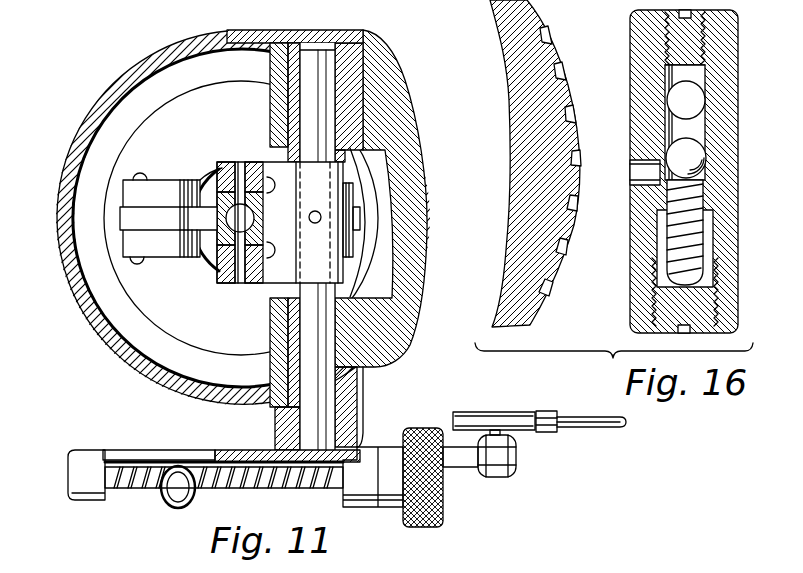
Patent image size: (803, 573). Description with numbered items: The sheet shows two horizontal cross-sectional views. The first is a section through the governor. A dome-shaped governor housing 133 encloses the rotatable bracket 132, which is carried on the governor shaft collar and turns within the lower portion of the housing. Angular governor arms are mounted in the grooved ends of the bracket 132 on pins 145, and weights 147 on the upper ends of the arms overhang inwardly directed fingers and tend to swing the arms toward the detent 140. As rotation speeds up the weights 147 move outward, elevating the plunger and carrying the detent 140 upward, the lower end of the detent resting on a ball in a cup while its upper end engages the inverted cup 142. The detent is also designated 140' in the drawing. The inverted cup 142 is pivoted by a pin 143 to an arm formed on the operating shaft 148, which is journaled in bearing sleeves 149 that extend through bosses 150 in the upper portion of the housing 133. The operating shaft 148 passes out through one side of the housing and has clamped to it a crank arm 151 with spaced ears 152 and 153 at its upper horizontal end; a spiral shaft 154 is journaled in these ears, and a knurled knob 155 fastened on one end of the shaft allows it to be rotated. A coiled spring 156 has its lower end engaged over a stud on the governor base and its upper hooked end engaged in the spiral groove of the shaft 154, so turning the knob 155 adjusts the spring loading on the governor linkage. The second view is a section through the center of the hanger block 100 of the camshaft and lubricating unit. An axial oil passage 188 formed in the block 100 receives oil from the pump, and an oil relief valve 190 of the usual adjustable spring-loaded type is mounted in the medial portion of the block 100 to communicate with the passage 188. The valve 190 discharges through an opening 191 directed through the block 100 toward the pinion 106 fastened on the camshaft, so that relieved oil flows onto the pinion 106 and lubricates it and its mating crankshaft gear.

In FIG. 11, the bracket 132 is at (360, 225).
In FIG. 11, the governor housing 133 is at (90, 318).
In FIG. 11, the detent 140 is at (168, 209).
In FIG. 11, the pin 140' is at (244, 195).
In FIG. 11, the inverted cup 142 is at (215, 283).
In FIG. 11, the pin 143 is at (240, 160).
In FIG. 11, the pins 145 is at (160, 163).
In FIG. 11, the weights 147 is at (175, 255).
In FIG. 11, the operating shaft 148 is at (308, 438).
In FIG. 11, the bearing sleeves 149 is at (352, 73).
In FIG. 11, the bosses 150 is at (272, 70).
In FIG. 11, the crank arm 151 is at (185, 452).
In FIG. 11, the ear 152 is at (378, 450).
In FIG. 11, the ear 153 is at (75, 455).
In FIG. 11, the spiral shaft 154 is at (140, 475).
In FIG. 11, the knurled knob 155 is at (413, 428).
In FIG. 11, the coiled spring 156 is at (163, 500).
In FIG. 16, the hanger block 100 is at (630, 22).
In FIG. 16, the pinion 106 is at (497, 30).
In FIG. 16, the axial oil passage 188 is at (672, 95).
In FIG. 16, the oil relief valve 190 is at (663, 307).
In FIG. 16, the opening 191 is at (632, 185).